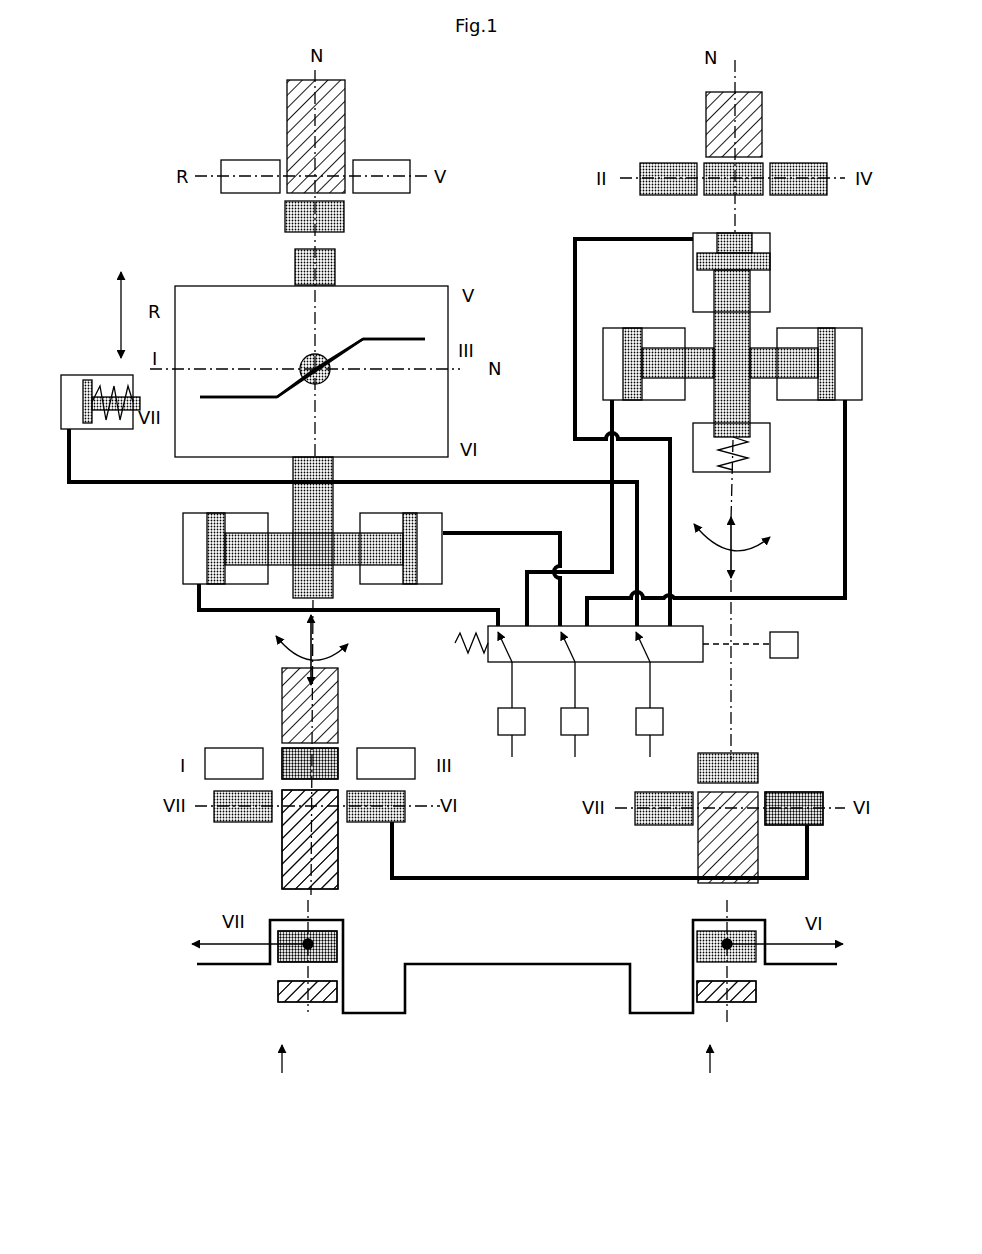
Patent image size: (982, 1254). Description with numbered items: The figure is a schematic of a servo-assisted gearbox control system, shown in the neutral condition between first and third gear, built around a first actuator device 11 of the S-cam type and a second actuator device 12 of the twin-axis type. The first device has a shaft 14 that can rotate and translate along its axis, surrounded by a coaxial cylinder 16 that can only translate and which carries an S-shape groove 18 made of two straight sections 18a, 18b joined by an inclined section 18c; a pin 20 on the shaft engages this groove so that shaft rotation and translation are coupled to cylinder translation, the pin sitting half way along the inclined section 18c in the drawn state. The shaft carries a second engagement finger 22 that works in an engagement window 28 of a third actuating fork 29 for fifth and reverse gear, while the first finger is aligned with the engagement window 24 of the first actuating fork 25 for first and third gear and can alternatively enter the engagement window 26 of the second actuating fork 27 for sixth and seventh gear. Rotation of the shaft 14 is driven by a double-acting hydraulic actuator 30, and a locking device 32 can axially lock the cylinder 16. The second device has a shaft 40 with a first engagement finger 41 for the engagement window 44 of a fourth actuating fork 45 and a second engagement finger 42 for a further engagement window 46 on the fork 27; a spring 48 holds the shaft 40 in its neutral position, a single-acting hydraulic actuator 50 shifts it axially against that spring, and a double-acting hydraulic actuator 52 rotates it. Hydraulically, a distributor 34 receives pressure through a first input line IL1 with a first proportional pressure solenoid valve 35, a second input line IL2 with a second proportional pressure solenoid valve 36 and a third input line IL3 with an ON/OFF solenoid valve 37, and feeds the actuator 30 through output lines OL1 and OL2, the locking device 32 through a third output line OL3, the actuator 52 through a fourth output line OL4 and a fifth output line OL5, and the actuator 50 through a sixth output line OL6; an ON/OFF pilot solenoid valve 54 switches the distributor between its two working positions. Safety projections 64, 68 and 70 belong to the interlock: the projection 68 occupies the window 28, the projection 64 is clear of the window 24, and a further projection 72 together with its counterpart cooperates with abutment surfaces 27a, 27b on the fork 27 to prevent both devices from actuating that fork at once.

The first actuator device 11 is at (187, 257).
The second actuator device 12 is at (795, 295).
The shaft 14 is at (336, 268).
The cylinder 16 is at (425, 286).
The S-shape groove 18 is at (236, 394).
The straight section 18a is at (215, 399).
The straight section 18b is at (398, 312).
The inclined section 18c is at (337, 363).
The pin 20 is at (322, 386).
The second engagement finger 22 is at (330, 212).
The engagement window 24 is at (270, 752).
The first actuating fork 25 is at (230, 758).
The engagement window 26 is at (276, 815).
The second actuating fork 27 is at (226, 820).
The abutment surface 27a is at (330, 1002).
The abutment surface 27b is at (706, 1002).
The engagement window 28 is at (346, 178).
The third actuating fork 29 is at (240, 164).
The double-acting hydraulic actuator 30 is at (215, 548).
The locking device 32 is at (78, 375).
The distributor 34 is at (700, 655).
The first proportional pressure solenoid valve 35 is at (511, 709).
The second proportional pressure solenoid valve 36 is at (574, 709).
The ON/OFF solenoid valve 37 is at (649, 709).
The shaft 40 is at (714, 330).
The first engagement finger 41 is at (742, 192).
The second engagement finger 42 is at (740, 770).
The engagement window 44 is at (705, 163).
The fourth actuating fork 45 is at (660, 167).
The engagement window 46 is at (765, 800).
The spring 48 is at (745, 456).
The single-acting hydraulic actuator 50 is at (770, 262).
The double-acting hydraulic actuator 52 is at (835, 392).
The ON/OFF pilot solenoid valve 54 is at (784, 645).
The axial projection 64 is at (338, 690).
The axial projection 68 is at (287, 100).
The synchronizer 70 is at (762, 110).
The projection 72 is at (755, 855).
The first output line OL1 is at (205, 612).
The second output line OL2 is at (530, 533).
The third output line OL3 is at (556, 482).
The fourth output line OL4 is at (527, 582).
The fifth output line OL5 is at (846, 535).
The sixth output line OL6 is at (575, 312).
The first input line IL1 is at (512, 690).
The second input line IL2 is at (606, 704).
The third input line IL3 is at (650, 690).